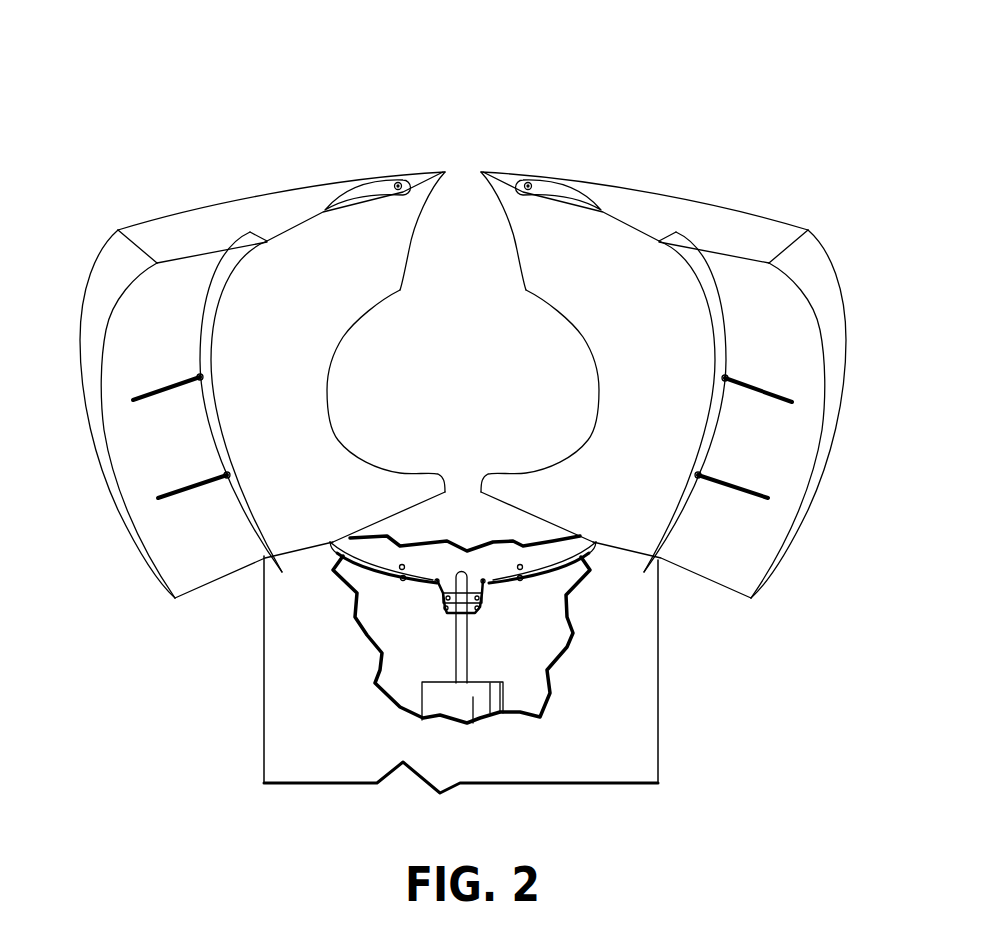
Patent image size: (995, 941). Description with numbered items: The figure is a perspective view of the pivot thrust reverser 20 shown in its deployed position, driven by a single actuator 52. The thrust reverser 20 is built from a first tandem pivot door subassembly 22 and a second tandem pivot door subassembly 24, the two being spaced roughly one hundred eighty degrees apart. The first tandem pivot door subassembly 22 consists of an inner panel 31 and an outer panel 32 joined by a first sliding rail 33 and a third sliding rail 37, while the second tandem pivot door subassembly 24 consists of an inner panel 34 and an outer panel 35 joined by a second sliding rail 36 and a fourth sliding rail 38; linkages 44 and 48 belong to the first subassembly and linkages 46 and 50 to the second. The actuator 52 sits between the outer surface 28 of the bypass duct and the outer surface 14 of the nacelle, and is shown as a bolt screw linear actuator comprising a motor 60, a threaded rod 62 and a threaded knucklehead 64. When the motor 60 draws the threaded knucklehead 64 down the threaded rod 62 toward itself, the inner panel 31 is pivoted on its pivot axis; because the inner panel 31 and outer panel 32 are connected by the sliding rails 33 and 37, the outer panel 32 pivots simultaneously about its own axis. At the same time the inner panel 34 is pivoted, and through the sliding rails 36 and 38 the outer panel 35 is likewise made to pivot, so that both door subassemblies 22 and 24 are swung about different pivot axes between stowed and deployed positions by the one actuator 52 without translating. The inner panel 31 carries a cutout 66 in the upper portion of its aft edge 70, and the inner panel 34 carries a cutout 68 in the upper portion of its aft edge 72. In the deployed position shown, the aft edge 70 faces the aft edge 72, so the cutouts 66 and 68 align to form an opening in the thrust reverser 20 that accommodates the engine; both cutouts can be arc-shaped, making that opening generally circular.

The pivot thrust reverser 20 is at (279, 97).
The first tandem pivot door subassembly 22 is at (739, 177).
The second tandem pivot door subassembly 24 is at (131, 200).
The outer surface of nacelle 14 is at (390, 655).
The outer surface of bypass duct 28 is at (288, 767).
The inner panel 31 is at (630, 537).
The outer panel 32 is at (757, 553).
The first sliding rail 33 is at (768, 500).
The inner panel 34 is at (283, 535).
The outer panel 35 is at (168, 554).
The second sliding rail 36 is at (133, 404).
The third sliding rail 37 is at (792, 404).
The fourth sliding rail 38 is at (157, 501).
The linkage 44 is at (540, 183).
The linkage 46 is at (383, 182).
The linkage 48 is at (550, 560).
The linkage 50 is at (370, 560).
The actuator 52 is at (522, 685).
The motor 60 is at (433, 702).
The threaded rod 62 is at (452, 636).
The threaded knucklehead 64 is at (478, 620).
The cutout 66 is at (580, 438).
The cutout 68 is at (333, 420).
The aft edge 70 is at (520, 248).
The aft edge 72 is at (407, 248).